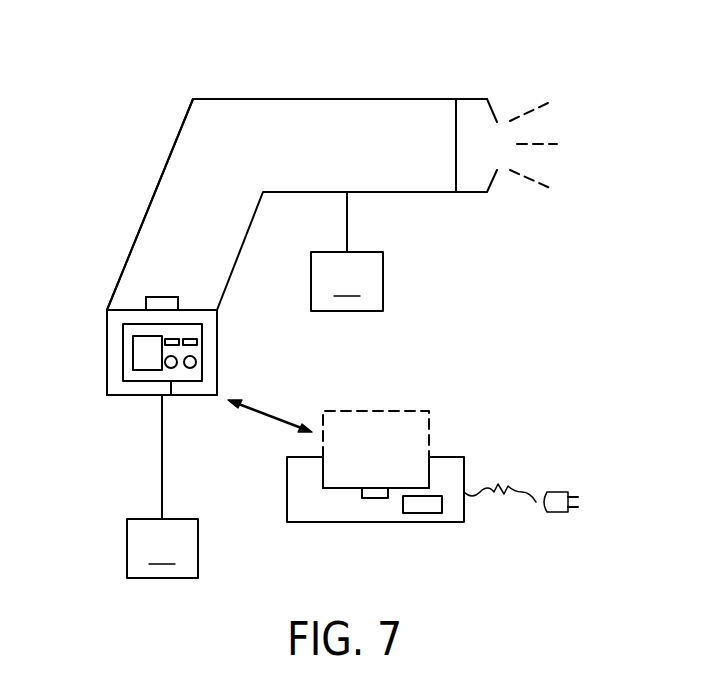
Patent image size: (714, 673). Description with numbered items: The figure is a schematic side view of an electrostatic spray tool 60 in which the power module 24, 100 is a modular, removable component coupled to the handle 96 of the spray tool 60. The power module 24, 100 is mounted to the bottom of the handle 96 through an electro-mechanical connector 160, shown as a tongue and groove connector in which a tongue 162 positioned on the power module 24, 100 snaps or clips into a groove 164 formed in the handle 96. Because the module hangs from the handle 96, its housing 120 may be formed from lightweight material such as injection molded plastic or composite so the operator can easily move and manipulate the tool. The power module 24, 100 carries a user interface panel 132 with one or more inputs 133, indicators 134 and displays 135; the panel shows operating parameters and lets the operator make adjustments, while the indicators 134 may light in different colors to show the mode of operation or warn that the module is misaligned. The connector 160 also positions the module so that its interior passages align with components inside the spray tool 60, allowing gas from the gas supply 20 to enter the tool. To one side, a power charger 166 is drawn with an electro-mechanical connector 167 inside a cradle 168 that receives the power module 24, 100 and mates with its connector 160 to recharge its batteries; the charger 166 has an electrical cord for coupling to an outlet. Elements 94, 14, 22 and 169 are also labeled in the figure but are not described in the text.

The spray tool 60 is at (221, 57).
The barrel housing 94 is at (340, 99).
The handle 96 is at (168, 148).
The emitted beam 14 is at (539, 103).
The component module 22 is at (347, 251).
The connector 160 is at (155, 267).
The housing 120 is at (107, 355).
The tongue 162 is at (163, 303).
The groove 164 is at (178, 305).
The power module 24 is at (217, 380).
The power module 100 is at (413, 411).
The displays 135 is at (133, 352).
The inputs 133 is at (188, 337).
The indicators 134 is at (193, 356).
The user interface panel 132 is at (172, 397).
The gas supply 20 is at (162, 486).
The power charger 166 is at (500, 460).
The electro-mechanical connector 167 is at (370, 498).
The cradle 168 is at (347, 488).
The charging circuit 169 is at (421, 513).